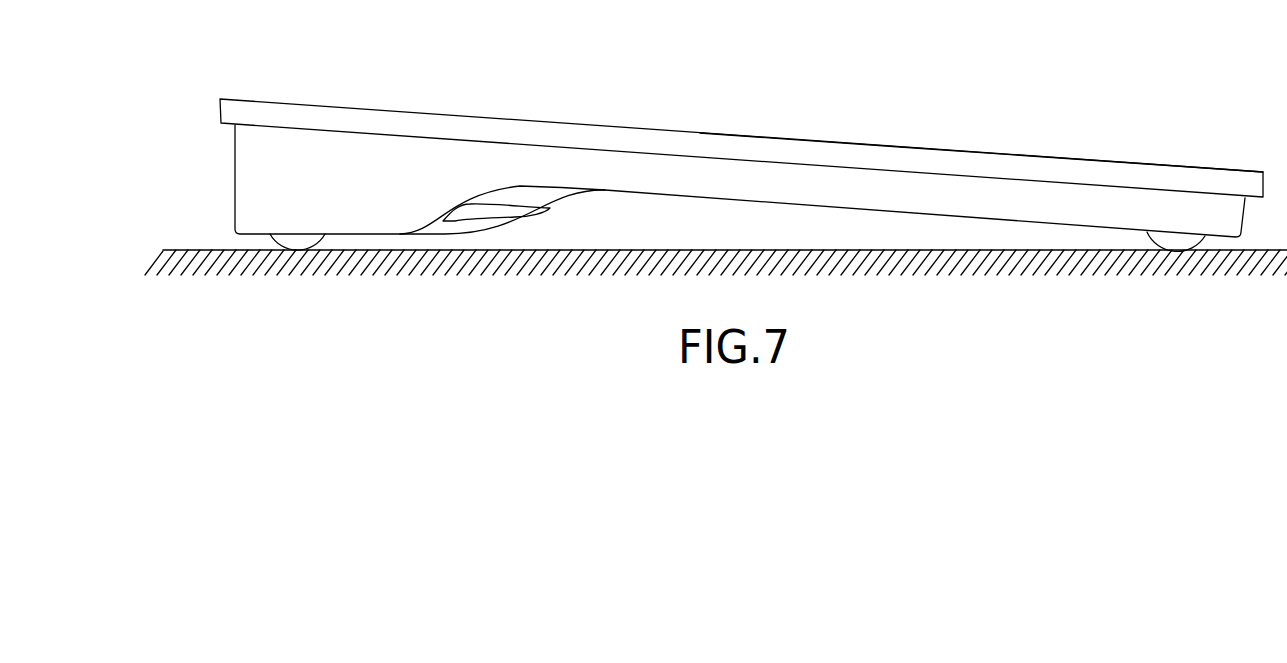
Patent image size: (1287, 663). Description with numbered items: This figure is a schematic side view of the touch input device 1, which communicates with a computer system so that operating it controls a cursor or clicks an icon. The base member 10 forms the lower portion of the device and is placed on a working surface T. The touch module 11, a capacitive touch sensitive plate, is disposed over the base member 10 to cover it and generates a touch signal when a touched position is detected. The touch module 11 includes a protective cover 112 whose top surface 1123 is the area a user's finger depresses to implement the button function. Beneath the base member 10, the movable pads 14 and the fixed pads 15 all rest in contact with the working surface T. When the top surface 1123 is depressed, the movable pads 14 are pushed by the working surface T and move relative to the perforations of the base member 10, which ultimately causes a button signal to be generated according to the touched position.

The touch input device 1 is at (1149, 103).
The base member 10 is at (254, 185).
The touch module 11 is at (330, 112).
The protective cover 112 is at (977, 150).
The top surface 1123 is at (853, 153).
The movable pads 14 is at (1183, 242).
The fixed pads 15 is at (297, 241).
The working surface T is at (650, 250).